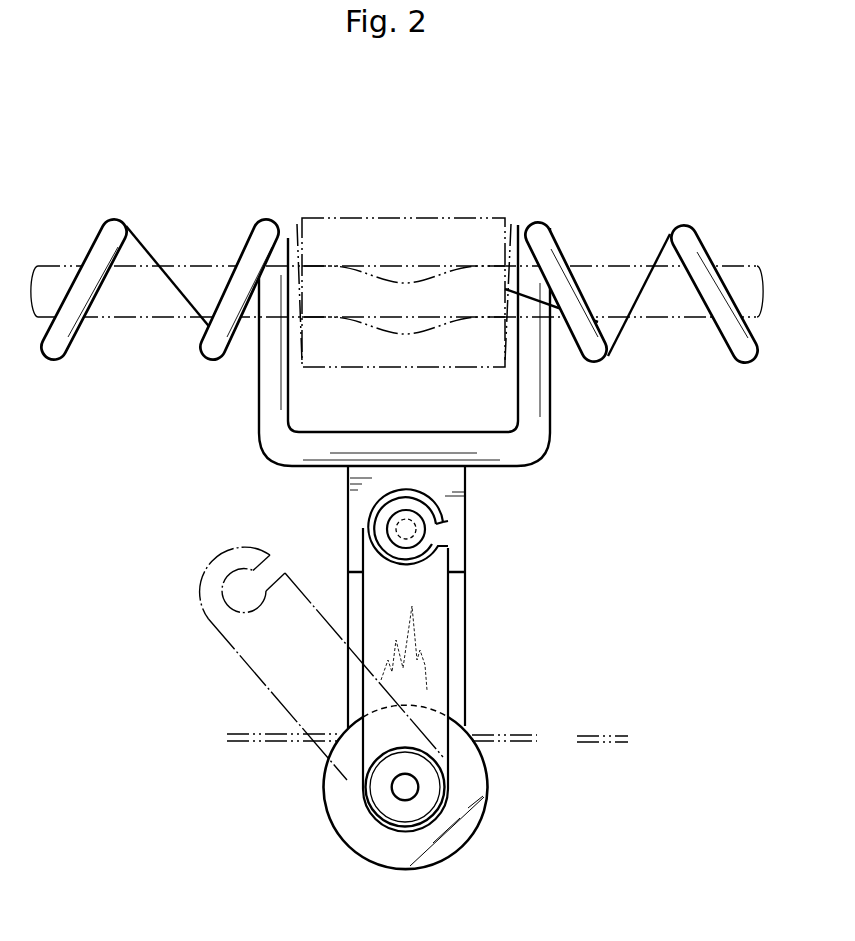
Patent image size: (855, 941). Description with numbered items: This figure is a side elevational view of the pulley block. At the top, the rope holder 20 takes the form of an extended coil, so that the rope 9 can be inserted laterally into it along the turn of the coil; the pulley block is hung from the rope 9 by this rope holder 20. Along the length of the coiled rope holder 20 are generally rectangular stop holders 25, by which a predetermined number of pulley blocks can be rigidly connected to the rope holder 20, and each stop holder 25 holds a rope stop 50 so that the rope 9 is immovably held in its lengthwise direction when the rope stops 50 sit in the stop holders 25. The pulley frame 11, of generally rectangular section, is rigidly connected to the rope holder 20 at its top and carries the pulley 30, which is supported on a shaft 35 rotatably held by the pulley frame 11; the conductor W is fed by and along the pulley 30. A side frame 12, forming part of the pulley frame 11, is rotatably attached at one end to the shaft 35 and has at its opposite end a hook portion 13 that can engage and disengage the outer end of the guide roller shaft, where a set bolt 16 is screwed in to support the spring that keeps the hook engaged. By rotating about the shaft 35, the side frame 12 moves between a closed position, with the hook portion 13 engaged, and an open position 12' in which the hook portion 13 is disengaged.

The rope 9 is at (733, 263).
The rope holder 20 is at (553, 243).
The rope stop 50 is at (482, 217).
The stop holder 25 is at (437, 431).
The pulley frame 11 is at (466, 508).
The side frame 12 is at (450, 680).
The open position 12' is at (312, 676).
The hook portion 13 is at (220, 548).
The set bolt 16 is at (436, 533).
The pulley 30 is at (473, 778).
The shaft 35 is at (402, 795).
The conductor W is at (618, 740).